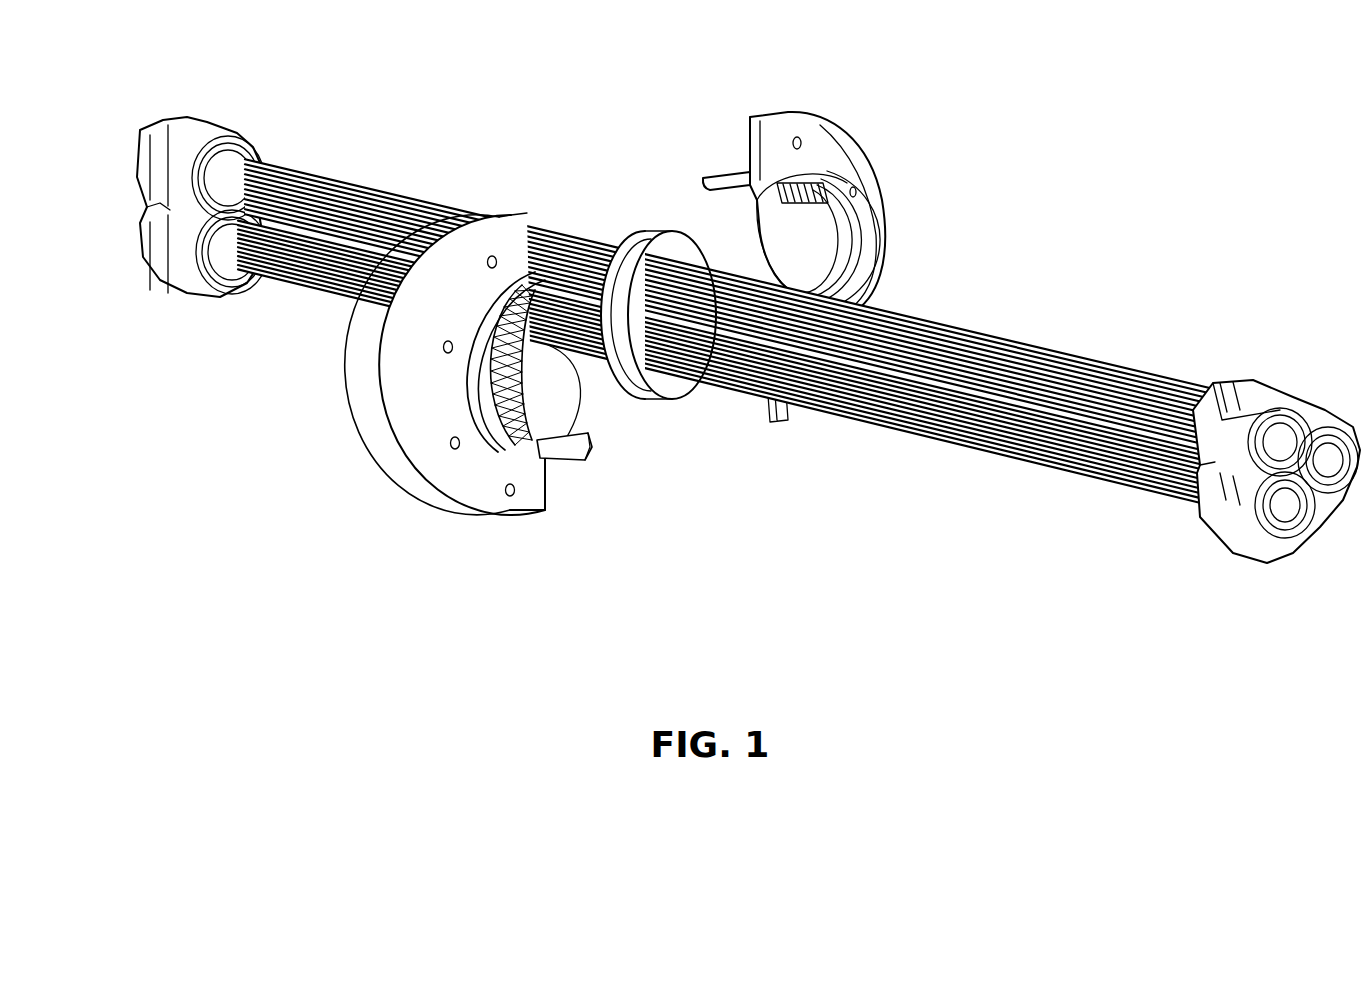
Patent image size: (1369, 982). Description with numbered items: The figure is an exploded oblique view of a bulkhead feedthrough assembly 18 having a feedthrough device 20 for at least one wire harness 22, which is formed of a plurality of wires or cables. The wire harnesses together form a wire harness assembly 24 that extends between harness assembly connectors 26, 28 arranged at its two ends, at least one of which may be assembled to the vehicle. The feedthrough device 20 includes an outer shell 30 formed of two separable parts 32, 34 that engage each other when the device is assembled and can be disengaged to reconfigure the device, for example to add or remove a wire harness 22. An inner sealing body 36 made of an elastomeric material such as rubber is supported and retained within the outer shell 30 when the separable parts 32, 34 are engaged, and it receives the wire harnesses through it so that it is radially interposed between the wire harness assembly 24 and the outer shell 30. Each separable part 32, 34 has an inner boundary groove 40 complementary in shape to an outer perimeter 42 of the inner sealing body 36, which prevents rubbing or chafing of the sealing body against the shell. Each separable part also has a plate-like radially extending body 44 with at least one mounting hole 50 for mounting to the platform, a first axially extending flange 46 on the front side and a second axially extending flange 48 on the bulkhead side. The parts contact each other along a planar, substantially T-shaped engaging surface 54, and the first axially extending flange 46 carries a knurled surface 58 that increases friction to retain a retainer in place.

The bulkhead feedthrough assembly 18 is at (120, 234).
The feedthrough device 20 is at (726, 284).
The wire harness 22 is at (313, 195).
The wire harness assembly 24 is at (380, 208).
The harness assembly connector 26 is at (177, 170).
The harness assembly connector 28 is at (1290, 440).
The outer shell 30 is at (490, 417).
The separable part 32 is at (523, 490).
The separable part 34 is at (841, 228).
The inner sealing body 36 is at (638, 253).
The inner boundary groove 40 is at (813, 264).
The outer perimeter 42 is at (627, 263).
The radially extending body 44 is at (453, 398).
The first axially extending flange 46 is at (483, 390).
The second axially extending flange 48 is at (725, 186).
The mounting hole 50 is at (445, 348).
The engaging surface 54 is at (837, 167).
The knurled surface 58 is at (540, 458).